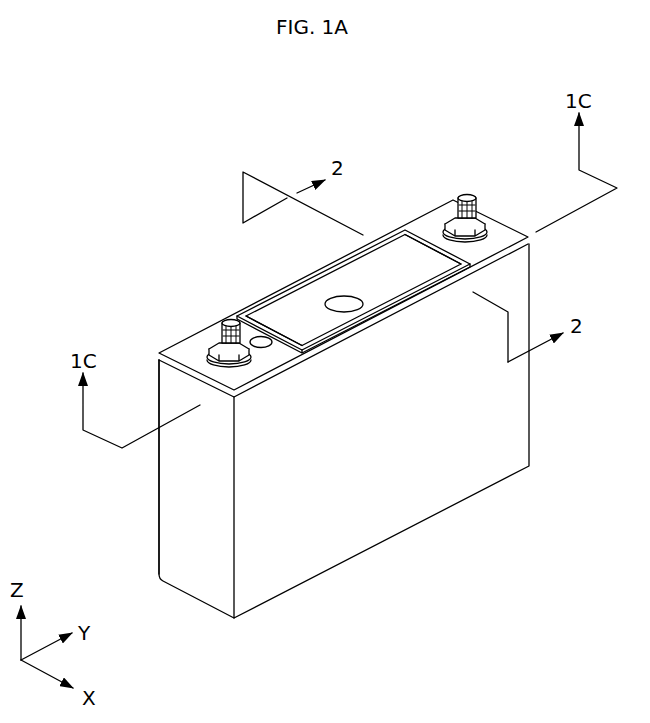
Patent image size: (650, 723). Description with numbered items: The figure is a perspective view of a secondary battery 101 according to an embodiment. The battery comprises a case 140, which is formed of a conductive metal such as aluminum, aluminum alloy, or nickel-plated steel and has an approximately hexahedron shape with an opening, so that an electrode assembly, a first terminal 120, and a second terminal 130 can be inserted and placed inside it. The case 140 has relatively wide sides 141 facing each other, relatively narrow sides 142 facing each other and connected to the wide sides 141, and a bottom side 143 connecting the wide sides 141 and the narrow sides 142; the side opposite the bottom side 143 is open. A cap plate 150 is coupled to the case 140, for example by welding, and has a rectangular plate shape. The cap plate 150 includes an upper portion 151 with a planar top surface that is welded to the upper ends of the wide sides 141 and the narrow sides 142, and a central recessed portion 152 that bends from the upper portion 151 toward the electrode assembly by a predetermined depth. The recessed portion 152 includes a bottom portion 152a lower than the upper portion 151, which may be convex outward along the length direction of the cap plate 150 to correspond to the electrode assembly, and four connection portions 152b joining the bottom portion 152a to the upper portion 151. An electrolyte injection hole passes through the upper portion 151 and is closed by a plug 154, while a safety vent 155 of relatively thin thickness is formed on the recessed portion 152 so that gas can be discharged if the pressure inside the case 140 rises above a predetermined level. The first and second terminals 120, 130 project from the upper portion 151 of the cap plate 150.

The secondary battery 101 is at (183, 213).
The first terminal 120 is at (222, 322).
The second terminal 130 is at (480, 191).
The case 140 is at (533, 390).
The wide sides 141 is at (252, 490).
The narrow sides 142 is at (180, 553).
The bottom side 143 is at (385, 543).
The cap plate 150 is at (449, 189).
The upper portion 151 is at (430, 223).
The recessed portion 152 is at (391, 239).
The bottom portion 152a is at (313, 333).
The connection portions 152b is at (418, 245).
The plug 154 is at (260, 337).
The safety vent 155 is at (345, 309).